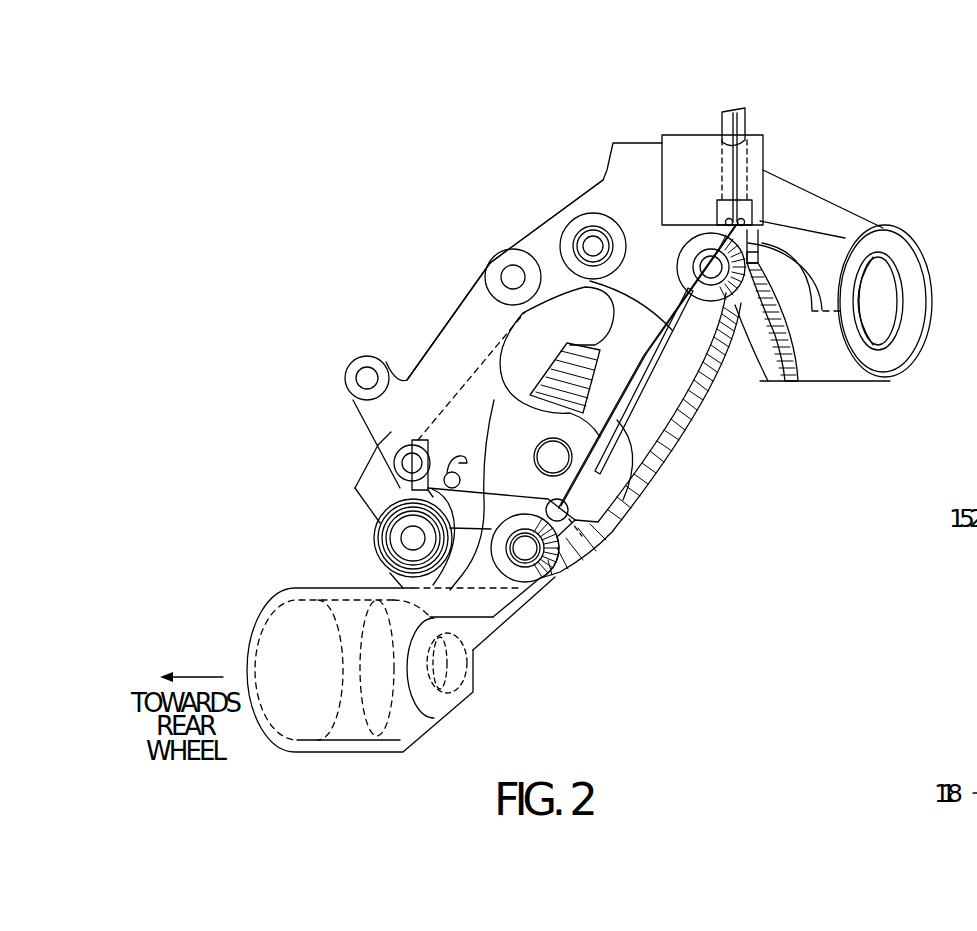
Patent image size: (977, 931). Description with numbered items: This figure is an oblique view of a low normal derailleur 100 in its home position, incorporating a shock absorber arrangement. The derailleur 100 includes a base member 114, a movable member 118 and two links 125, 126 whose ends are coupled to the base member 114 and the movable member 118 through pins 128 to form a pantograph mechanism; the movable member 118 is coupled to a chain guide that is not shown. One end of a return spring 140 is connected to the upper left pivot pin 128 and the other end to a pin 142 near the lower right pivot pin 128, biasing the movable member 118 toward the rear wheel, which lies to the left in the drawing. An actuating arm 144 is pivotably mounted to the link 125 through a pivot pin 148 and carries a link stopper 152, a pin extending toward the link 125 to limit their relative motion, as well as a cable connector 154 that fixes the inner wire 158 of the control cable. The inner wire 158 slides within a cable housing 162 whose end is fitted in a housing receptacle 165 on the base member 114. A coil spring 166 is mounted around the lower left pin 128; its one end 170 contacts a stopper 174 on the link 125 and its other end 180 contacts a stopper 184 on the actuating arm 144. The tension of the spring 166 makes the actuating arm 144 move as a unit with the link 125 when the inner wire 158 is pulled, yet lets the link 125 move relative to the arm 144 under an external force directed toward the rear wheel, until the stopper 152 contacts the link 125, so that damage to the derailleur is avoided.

The low normal derailleur 100 is at (680, 590).
The base member 114 is at (890, 228).
The movable member 118 is at (475, 660).
The link 125 is at (530, 247).
The link 126 is at (698, 430).
The pivot pin 128 is at (594, 248).
The return spring 140 is at (632, 352).
The pin 142 is at (608, 544).
The actuating arm 144 is at (448, 330).
The pivot pin 148 is at (506, 278).
The link stopper 152 is at (362, 378).
The cable connector 154 is at (546, 463).
The inner wire 158 is at (656, 472).
The cable housing 162 is at (745, 132).
The housing receptacle 165 is at (672, 142).
The coil spring 166 is at (714, 112).
The spring end 170 is at (440, 455).
The stopper 174 is at (486, 447).
The spring end 180 is at (416, 437).
The stopper 184 is at (393, 458).